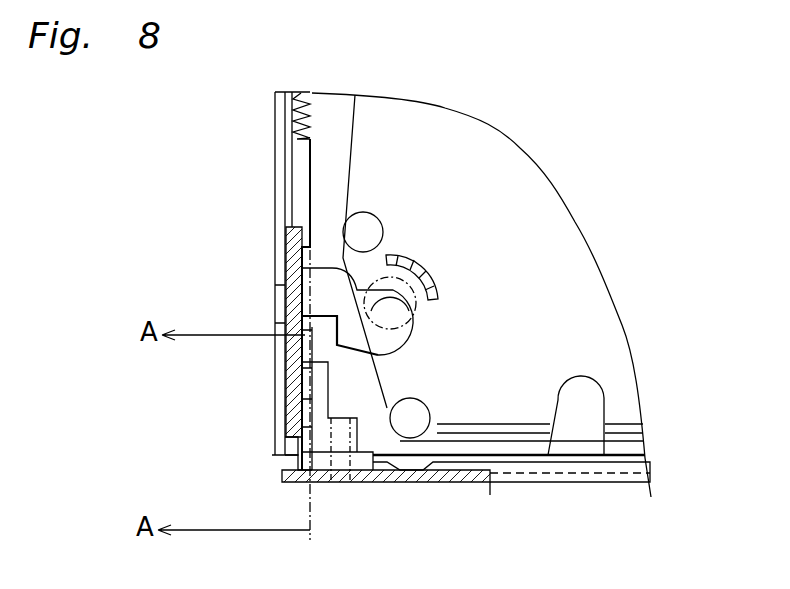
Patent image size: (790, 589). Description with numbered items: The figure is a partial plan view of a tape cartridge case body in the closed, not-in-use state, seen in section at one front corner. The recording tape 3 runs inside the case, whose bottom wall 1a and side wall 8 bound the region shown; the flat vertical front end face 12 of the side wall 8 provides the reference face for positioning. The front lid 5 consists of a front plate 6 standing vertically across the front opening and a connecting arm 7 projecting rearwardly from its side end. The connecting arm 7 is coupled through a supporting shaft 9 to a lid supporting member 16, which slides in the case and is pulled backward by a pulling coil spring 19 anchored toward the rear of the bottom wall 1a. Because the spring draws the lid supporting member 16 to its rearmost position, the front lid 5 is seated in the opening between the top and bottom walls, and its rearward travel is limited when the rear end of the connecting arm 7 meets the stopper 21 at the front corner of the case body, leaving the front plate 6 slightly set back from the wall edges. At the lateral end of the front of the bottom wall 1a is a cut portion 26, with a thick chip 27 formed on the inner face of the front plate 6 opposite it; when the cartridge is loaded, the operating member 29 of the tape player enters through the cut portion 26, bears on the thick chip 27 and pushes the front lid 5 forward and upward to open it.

The bottom wall 1a is at (553, 213).
The recording tape 3 is at (347, 177).
The front lid 5 is at (538, 483).
The front plate 6 is at (467, 483).
The connecting arm 7 is at (282, 463).
The side wall 8 is at (283, 130).
The supporting shaft 9 is at (277, 397).
The flat vertical front end face 12 is at (282, 458).
The lid supporting member 16 is at (280, 350).
The pulling coil spring 19 is at (310, 92).
The stopper 21 is at (282, 372).
The cut portion 26 is at (350, 482).
The thick chip 27 is at (380, 462).
The operating member 29 is at (336, 440).